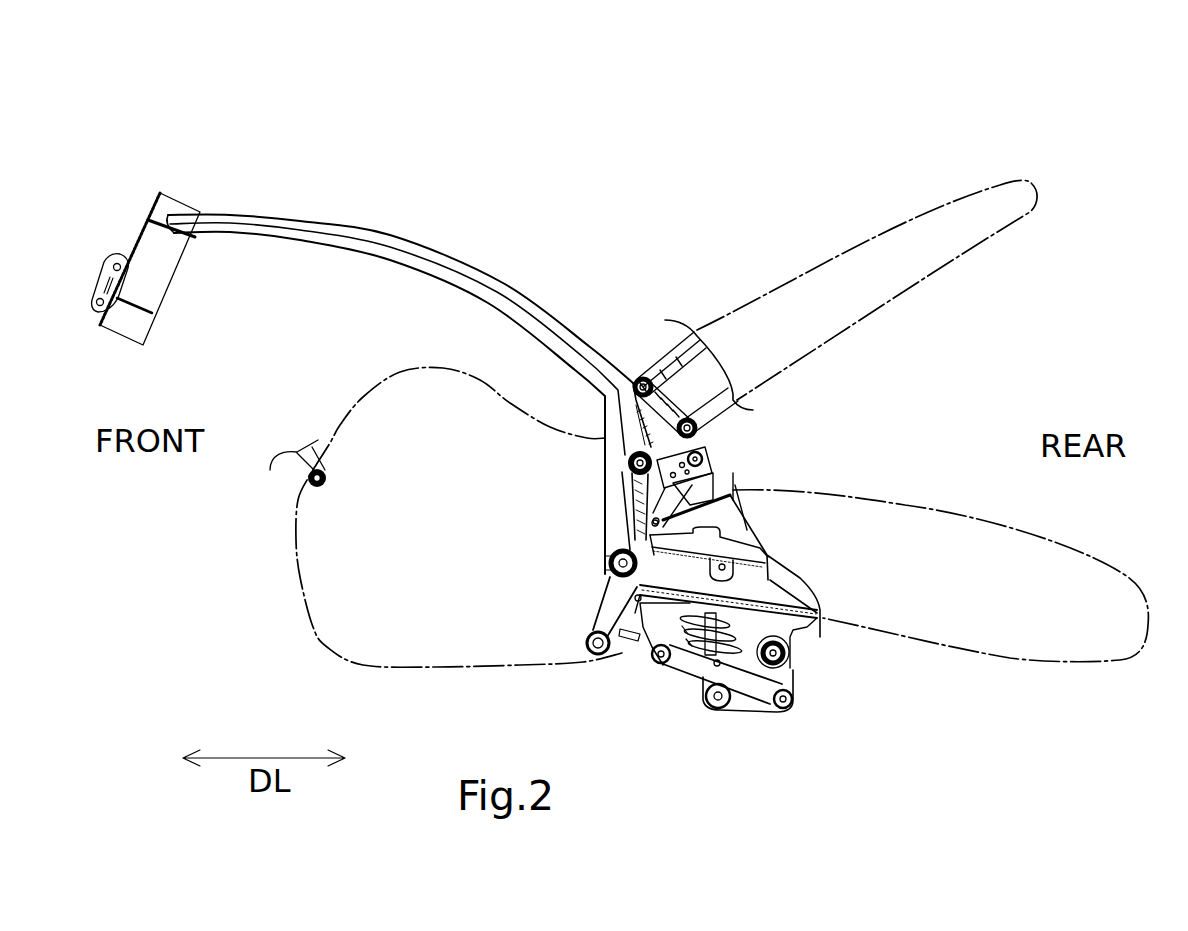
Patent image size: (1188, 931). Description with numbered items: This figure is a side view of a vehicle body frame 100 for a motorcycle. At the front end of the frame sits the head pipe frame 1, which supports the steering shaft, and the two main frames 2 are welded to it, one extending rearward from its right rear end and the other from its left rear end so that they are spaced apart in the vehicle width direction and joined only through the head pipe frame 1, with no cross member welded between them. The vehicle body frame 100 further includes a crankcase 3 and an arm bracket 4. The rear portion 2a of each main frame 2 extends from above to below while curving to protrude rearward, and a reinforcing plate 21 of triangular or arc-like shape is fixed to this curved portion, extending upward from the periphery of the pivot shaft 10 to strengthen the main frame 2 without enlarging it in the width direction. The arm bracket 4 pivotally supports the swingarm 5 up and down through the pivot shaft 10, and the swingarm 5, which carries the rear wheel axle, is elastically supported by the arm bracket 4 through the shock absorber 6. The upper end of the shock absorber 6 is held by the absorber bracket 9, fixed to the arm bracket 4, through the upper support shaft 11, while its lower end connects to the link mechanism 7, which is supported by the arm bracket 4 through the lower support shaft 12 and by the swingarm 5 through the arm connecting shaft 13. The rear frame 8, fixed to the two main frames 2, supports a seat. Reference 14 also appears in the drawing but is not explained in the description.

The vehicle body frame 100 is at (574, 150).
The head pipe frame 1 is at (172, 205).
The main frame 2 is at (503, 282).
The rear portion 2a is at (627, 512).
The reinforcing plate 21 is at (604, 426).
The crankcase 3 is at (307, 623).
The arm bracket 4 is at (607, 615).
The swingarm 5 is at (910, 505).
The shock absorber 6 is at (697, 652).
The link mechanism 7 is at (733, 729).
The rear frame 8 is at (750, 297).
The absorber bracket 9 is at (710, 474).
The pivot shaft 10 is at (612, 560).
The upper support shaft 11 is at (705, 432).
The lower support shaft 12 is at (660, 668).
The arm connecting shaft 13 is at (790, 648).
The fastening bolt 14 is at (627, 459).